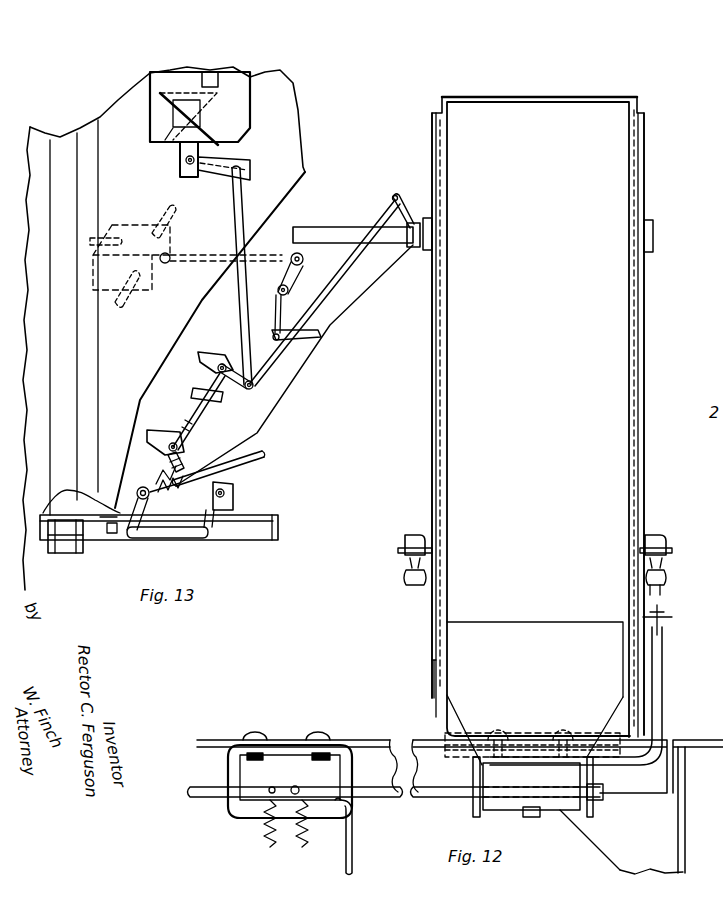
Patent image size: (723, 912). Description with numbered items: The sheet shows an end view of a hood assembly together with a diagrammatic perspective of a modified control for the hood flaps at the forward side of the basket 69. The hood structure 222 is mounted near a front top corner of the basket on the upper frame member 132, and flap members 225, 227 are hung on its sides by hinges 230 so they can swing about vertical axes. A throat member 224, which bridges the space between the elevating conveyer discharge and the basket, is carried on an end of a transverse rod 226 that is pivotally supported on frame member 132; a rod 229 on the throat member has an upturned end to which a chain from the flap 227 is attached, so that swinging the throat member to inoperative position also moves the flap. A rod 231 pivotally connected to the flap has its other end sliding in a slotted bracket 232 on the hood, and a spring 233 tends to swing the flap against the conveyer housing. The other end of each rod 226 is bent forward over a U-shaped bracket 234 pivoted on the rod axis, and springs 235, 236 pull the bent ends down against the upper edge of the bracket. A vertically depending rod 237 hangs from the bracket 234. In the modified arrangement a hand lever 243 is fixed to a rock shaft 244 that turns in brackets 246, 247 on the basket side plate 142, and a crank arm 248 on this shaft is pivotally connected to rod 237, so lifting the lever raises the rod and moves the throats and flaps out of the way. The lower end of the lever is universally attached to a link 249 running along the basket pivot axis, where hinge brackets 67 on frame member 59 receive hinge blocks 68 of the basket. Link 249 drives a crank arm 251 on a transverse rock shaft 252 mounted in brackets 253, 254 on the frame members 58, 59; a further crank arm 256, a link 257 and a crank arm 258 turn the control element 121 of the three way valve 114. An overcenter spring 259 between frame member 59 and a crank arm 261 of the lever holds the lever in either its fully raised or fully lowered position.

In FIG. 13, the basket support frame member 58 is at (335, 227).
In FIG. 13, the basket support frame member 59 is at (282, 532).
In FIG. 13, the hinge bracket 67 is at (105, 535).
In FIG. 13, the hinge block 68 is at (65, 552).
In FIG. 13, the basket 69 is at (164, 328).
In FIG. 13, the three way valve 114 is at (131, 228).
In FIG. 13, the control element 121 is at (212, 260).
In FIG. 12, the top member 132 is at (392, 741).
In FIG. 13, the vertical plate member 142 is at (330, 190).
In FIG. 12, the hood structure 222 is at (578, 95).
In FIG. 13, the throat member 224 is at (222, 135).
In FIG. 12, the throat member 224 is at (547, 628).
In FIG. 12, the flap member 225 is at (426, 348).
In FIG. 13, the transverse rod 226 is at (244, 157).
In FIG. 12, the transverse rod 226 is at (215, 800).
In FIG. 13, the flap member 227 is at (246, 80).
In FIG. 12, the flap member 227 is at (644, 357).
In FIG. 12, the rod 229 is at (662, 666).
In FIG. 12, the hinge 230 is at (660, 240).
In FIG. 12, the rod 231 is at (654, 536).
In FIG. 12, the slotted bracket 232 is at (532, 773).
In FIG. 12, the spring 233 is at (668, 573).
In FIG. 12, the U-shaped bracket 234 is at (254, 818).
In FIG. 12, the spring 235 is at (266, 850).
In FIG. 12, the spring 236 is at (304, 848).
In FIG. 13, the rod 237 is at (231, 187).
In FIG. 12, the rod 237 is at (356, 850).
In FIG. 13, the hand lever 243 is at (266, 455).
In FIG. 13, the rock shaft 244 is at (196, 424).
In FIG. 13, the bracket 246 is at (167, 433).
In FIG. 13, the bracket 247 is at (210, 350).
In FIG. 13, the crank arm 248 is at (223, 398).
In FIG. 13, the link 249 is at (167, 537).
In FIG. 13, the crank arm 251 is at (212, 536).
In FIG. 13, the transverse rock shaft 252 is at (348, 294).
In FIG. 13, the bracket 253 is at (393, 195).
In FIG. 13, the bracket 254 is at (234, 503).
In FIG. 13, the crank arm 256 is at (288, 334).
In FIG. 13, the link 257 is at (283, 312).
In FIG. 13, the crank arm 258 is at (300, 280).
In FIG. 13, the spring 259 is at (138, 488).
In FIG. 13, the crank arm 261 is at (186, 470).